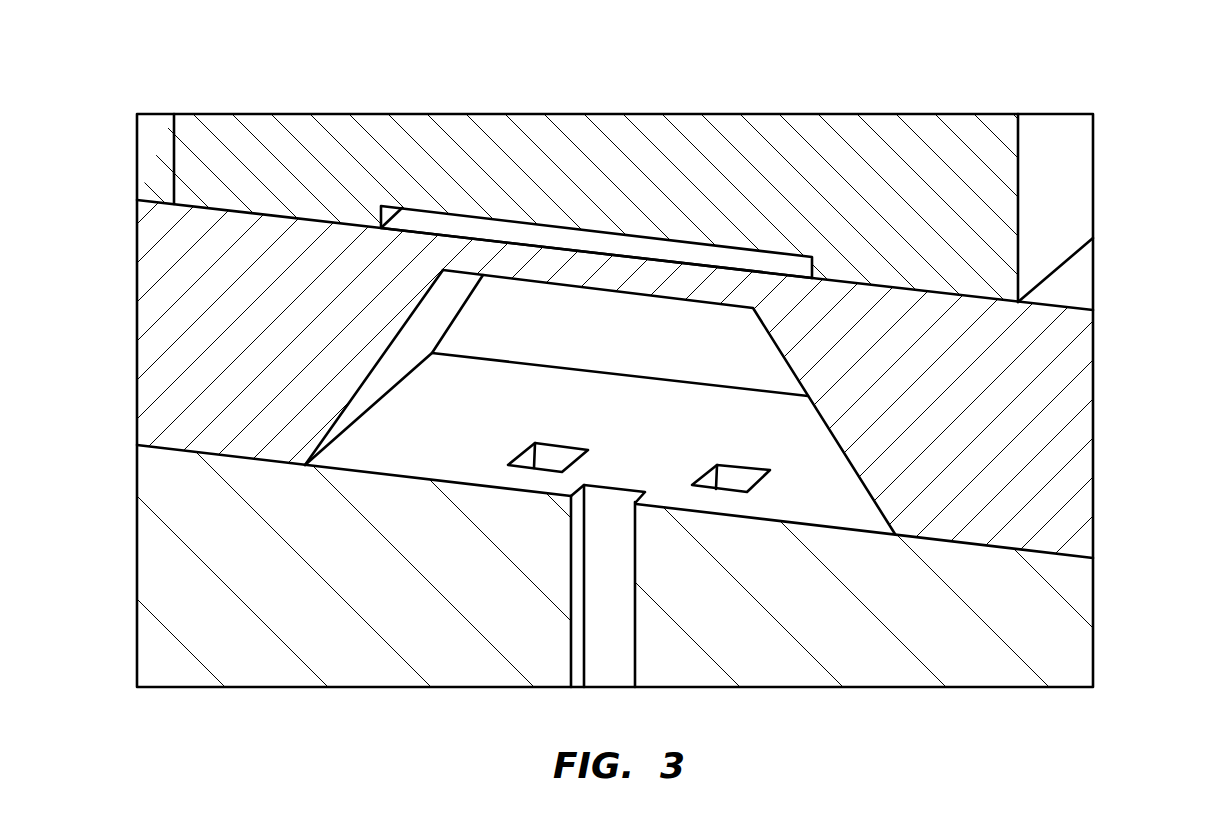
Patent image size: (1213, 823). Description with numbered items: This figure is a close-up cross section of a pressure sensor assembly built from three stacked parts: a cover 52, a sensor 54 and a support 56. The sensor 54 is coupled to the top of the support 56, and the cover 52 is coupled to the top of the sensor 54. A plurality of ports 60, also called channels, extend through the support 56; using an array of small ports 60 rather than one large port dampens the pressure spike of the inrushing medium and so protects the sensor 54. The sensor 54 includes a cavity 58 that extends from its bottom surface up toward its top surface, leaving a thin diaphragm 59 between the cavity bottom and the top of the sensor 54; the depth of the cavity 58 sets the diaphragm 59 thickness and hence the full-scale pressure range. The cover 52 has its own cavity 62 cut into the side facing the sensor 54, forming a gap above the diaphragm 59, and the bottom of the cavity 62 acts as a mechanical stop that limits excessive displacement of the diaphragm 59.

The cover 52 is at (903, 150).
The sensor 54 is at (1040, 425).
The support 56 is at (1053, 636).
The cavity 58 is at (705, 342).
The diaphragm 59 is at (550, 263).
The ports 60 is at (735, 475).
The cavity 62 is at (642, 247).